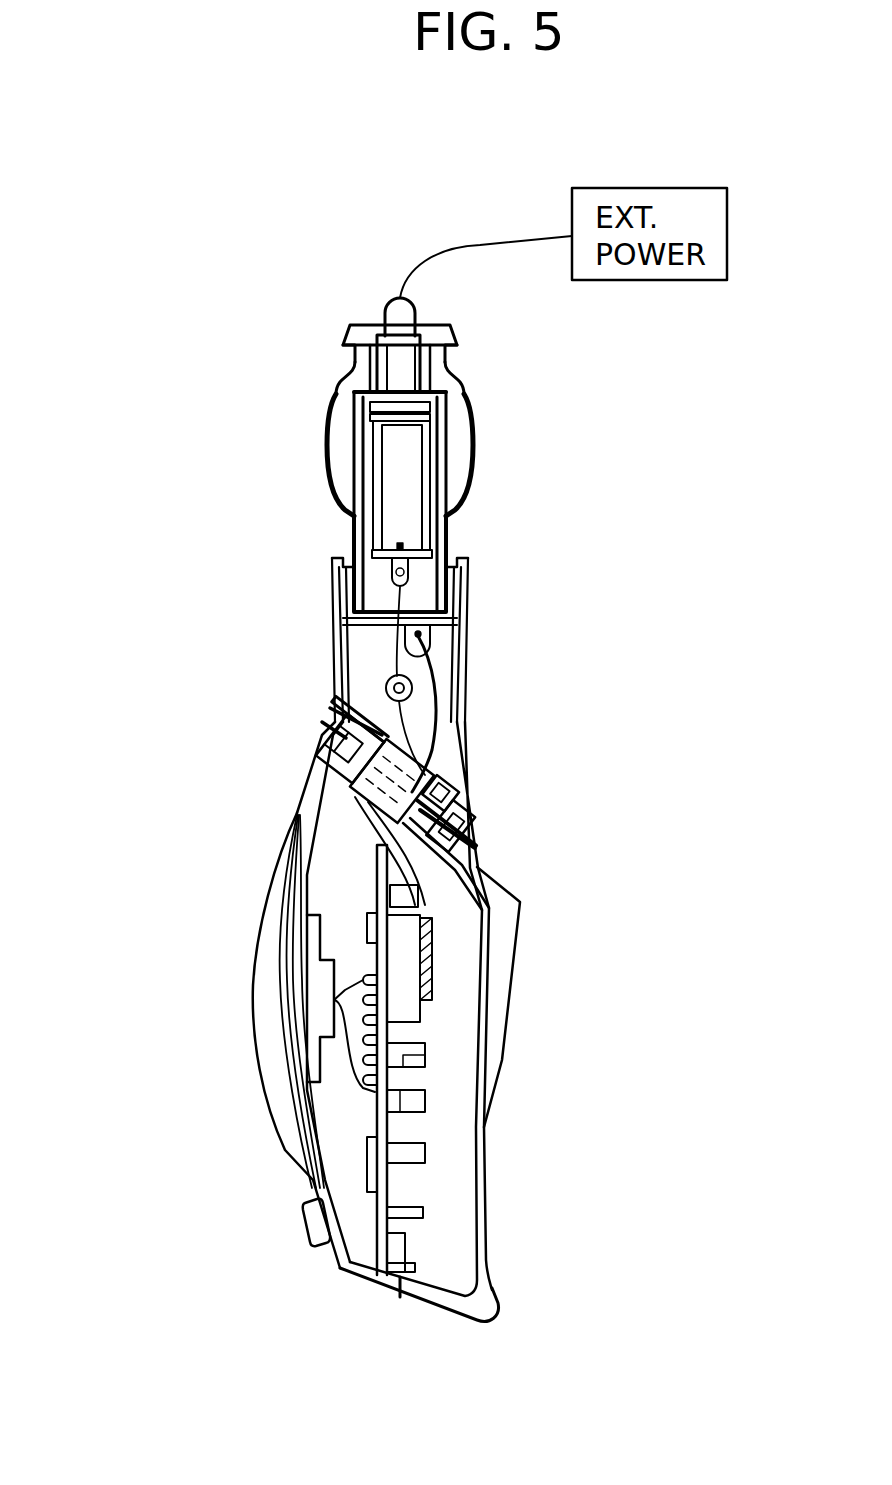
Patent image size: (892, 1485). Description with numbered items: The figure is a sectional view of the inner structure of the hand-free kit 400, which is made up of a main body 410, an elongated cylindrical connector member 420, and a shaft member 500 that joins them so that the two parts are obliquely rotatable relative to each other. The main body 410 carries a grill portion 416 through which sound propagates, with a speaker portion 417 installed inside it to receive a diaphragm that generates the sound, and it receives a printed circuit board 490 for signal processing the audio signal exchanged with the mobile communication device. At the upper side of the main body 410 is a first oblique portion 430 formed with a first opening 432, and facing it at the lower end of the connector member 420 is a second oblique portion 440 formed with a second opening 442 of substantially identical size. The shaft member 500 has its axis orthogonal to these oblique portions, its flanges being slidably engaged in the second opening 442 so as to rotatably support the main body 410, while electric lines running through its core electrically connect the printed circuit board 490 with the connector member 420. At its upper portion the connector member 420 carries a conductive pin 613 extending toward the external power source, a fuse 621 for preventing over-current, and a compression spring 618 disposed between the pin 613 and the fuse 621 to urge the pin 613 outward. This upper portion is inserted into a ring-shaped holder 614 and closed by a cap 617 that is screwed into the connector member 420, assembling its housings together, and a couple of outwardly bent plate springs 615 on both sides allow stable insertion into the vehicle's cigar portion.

The hand-free kit 400 is at (277, 207).
The main body 410 is at (233, 997).
The grill portion 416 is at (270, 925).
The speaker portion 417 is at (328, 1020).
The connector member 420 is at (308, 531).
The first oblique portion 430 is at (465, 853).
The first opening 432 is at (418, 790).
The second oblique portion 440 is at (455, 823).
The second opening 442 is at (452, 794).
The printed circuit board 490 is at (427, 1027).
The shaft member 500 is at (412, 783).
The pin 613 is at (397, 313).
The holder 614 is at (345, 380).
The plate springs 615 is at (474, 447).
The cap 617 is at (435, 341).
The compression spring 618 is at (405, 376).
The fuse 621 is at (405, 480).